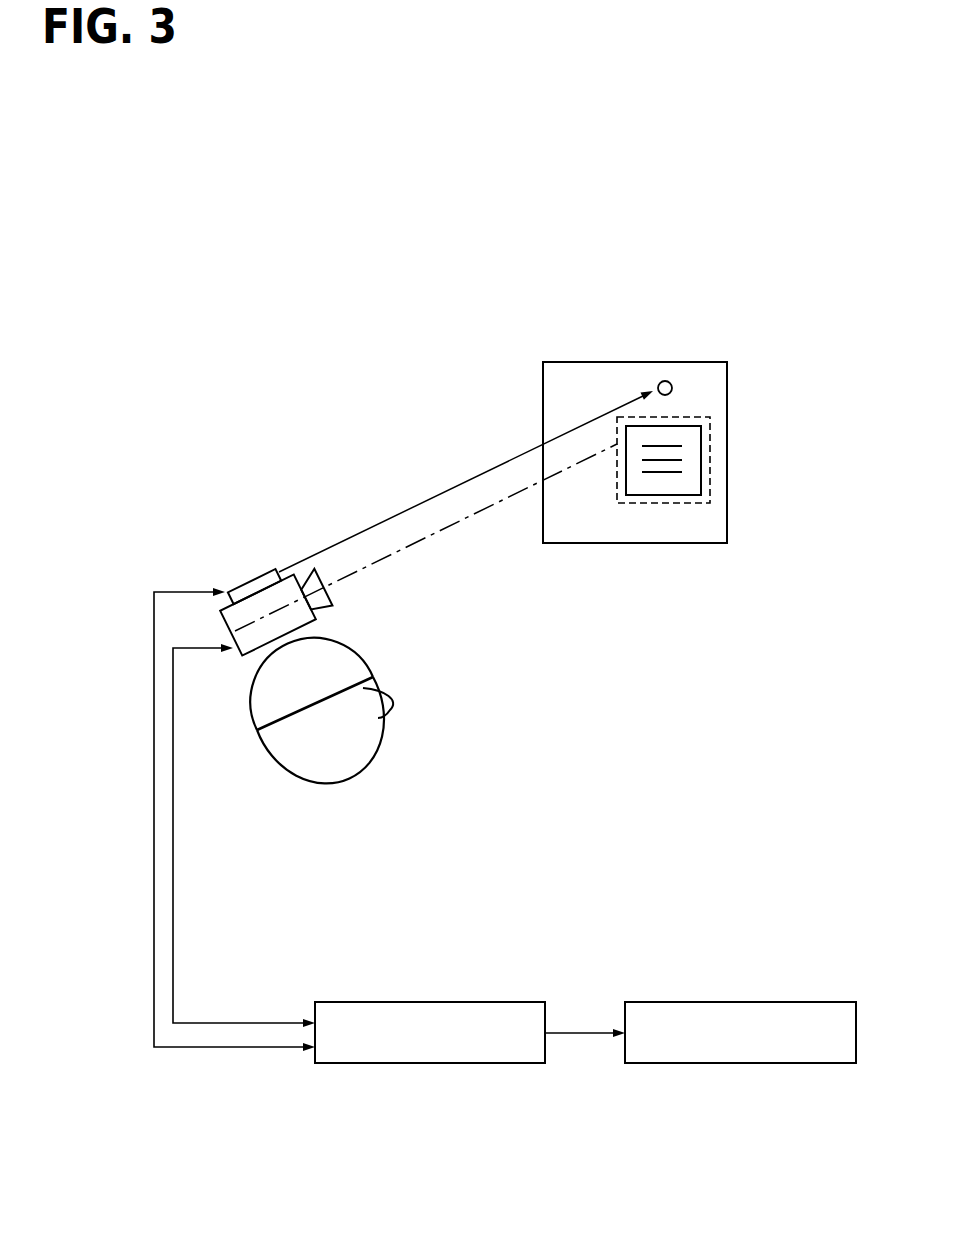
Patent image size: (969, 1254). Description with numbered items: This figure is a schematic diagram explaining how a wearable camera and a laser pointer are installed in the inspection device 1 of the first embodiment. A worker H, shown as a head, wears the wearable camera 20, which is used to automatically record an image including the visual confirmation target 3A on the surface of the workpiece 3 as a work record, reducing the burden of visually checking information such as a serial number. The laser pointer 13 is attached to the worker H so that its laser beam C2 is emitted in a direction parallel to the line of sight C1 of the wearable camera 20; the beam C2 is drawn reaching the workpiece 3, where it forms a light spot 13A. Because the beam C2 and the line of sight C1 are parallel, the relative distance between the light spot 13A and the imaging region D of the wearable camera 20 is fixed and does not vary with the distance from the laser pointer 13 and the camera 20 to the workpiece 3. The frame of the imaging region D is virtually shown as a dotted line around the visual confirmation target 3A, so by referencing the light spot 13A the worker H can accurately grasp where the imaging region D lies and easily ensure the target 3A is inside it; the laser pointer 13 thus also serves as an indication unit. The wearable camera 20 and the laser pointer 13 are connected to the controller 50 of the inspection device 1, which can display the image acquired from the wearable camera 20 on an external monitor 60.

The inspection device 1 is at (150, 517).
The workpiece 3 is at (727, 362).
The visual confirmation target 3A is at (662, 495).
The laser pointer 13 is at (259, 568).
The light spot 13A is at (665, 380).
The wearable camera 20 is at (313, 617).
The controller 50 is at (512, 1002).
The external monitor 60 is at (822, 1002).
The line of sight C1 is at (470, 517).
The laser beam C2 is at (457, 485).
The imaging region D is at (710, 463).
The worker H is at (288, 782).